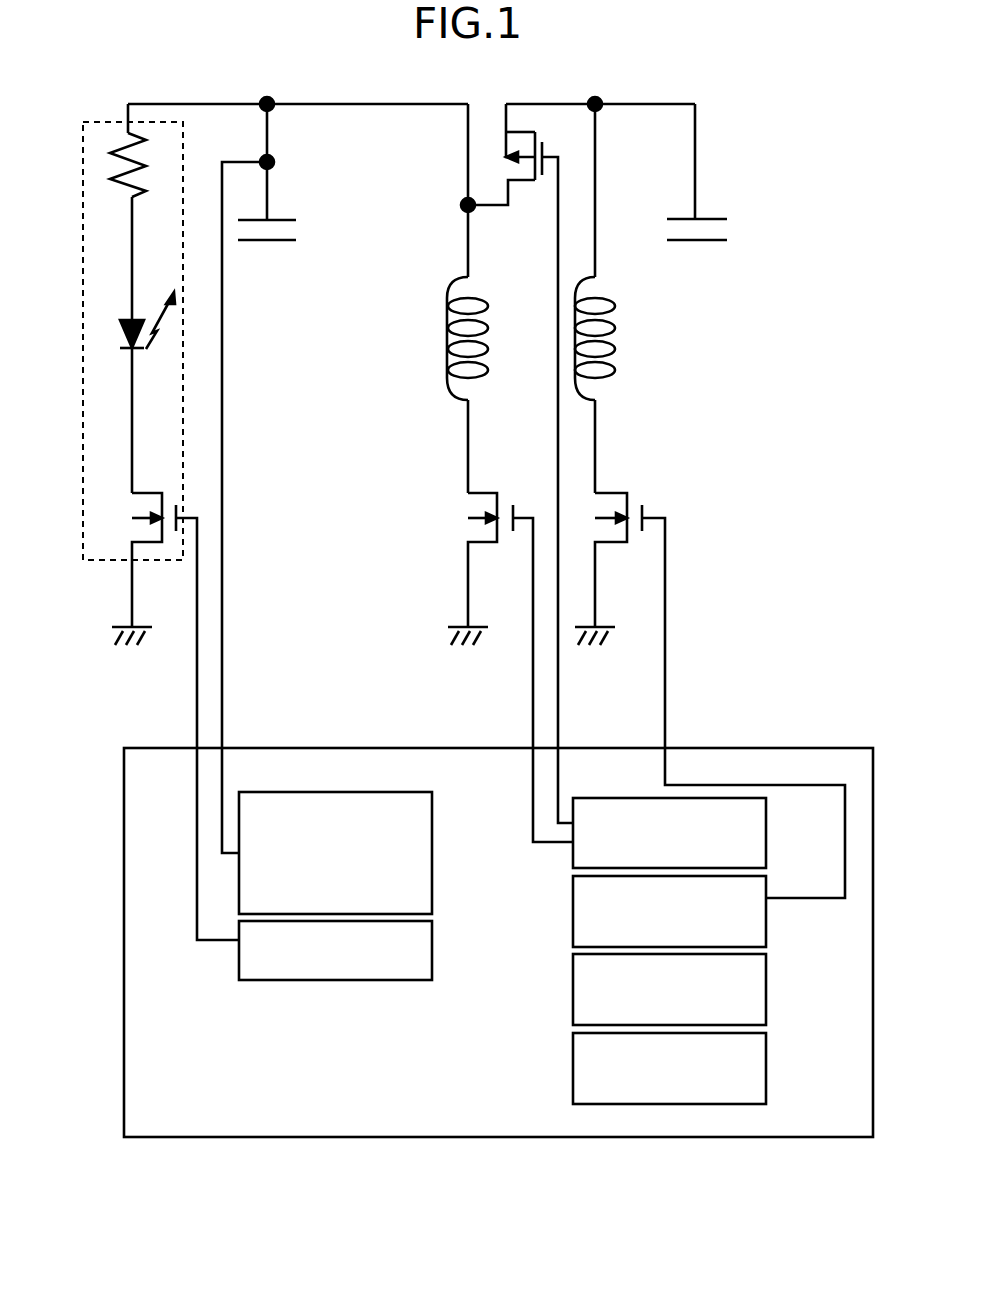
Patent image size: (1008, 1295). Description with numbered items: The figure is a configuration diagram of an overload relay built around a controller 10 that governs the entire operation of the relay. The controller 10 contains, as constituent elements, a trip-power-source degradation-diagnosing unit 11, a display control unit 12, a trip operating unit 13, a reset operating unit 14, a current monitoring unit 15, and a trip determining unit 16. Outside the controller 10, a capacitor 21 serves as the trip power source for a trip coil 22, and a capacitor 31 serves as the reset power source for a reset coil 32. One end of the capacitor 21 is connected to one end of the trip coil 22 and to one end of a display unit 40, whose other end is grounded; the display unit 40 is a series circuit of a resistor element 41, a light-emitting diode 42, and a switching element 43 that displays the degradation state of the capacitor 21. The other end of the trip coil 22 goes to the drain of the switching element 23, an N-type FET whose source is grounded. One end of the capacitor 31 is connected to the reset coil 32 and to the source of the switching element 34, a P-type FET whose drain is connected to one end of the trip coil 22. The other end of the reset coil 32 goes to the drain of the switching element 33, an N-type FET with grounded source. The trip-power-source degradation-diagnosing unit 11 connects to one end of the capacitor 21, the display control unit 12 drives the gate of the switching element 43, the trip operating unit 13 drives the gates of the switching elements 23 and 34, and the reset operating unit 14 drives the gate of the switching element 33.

The controller 10 is at (787, 1137).
The trip-power-source degradation-diagnosing unit 11 is at (433, 857).
The display control unit 12 is at (433, 952).
The trip operating unit 13 is at (768, 837).
The reset operating unit 14 is at (768, 919).
The current monitoring unit 15 is at (768, 989).
The trip determining unit 16 is at (768, 1067).
The capacitor 21 is at (296, 229).
The trip coil 22 is at (447, 352).
The switching element 23 is at (468, 522).
The capacitor 31 is at (728, 228).
The reset coil 32 is at (617, 368).
The switching element 33 is at (627, 493).
The switching element 34 is at (520, 184).
The display unit 40 is at (108, 560).
The resistor element 41 is at (127, 168).
The light-emitting diode 42 is at (132, 340).
The switching element 43 is at (132, 518).